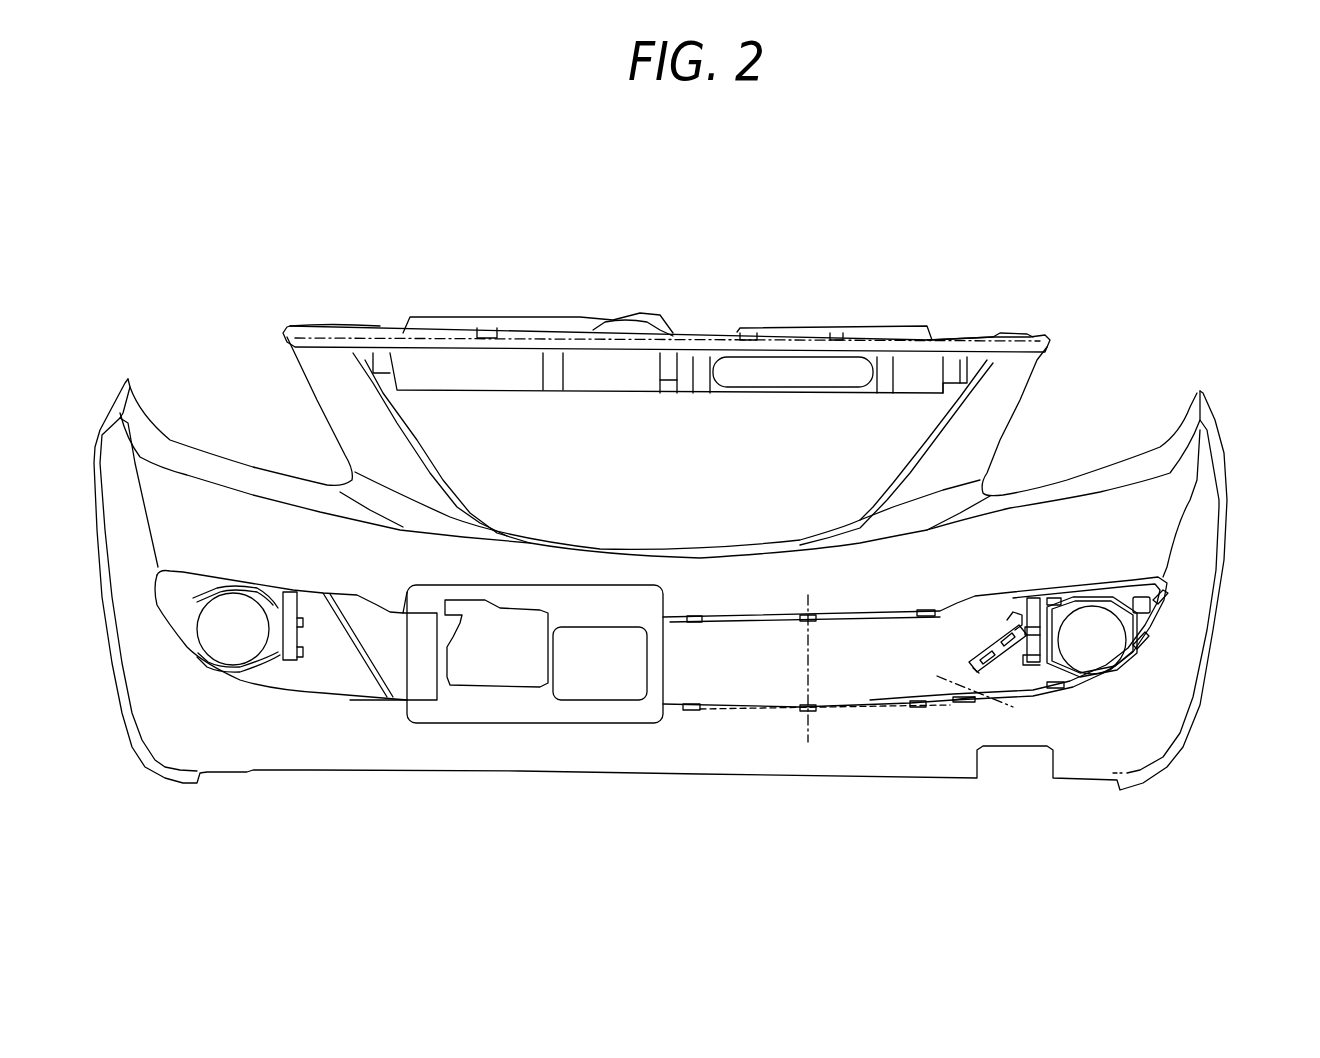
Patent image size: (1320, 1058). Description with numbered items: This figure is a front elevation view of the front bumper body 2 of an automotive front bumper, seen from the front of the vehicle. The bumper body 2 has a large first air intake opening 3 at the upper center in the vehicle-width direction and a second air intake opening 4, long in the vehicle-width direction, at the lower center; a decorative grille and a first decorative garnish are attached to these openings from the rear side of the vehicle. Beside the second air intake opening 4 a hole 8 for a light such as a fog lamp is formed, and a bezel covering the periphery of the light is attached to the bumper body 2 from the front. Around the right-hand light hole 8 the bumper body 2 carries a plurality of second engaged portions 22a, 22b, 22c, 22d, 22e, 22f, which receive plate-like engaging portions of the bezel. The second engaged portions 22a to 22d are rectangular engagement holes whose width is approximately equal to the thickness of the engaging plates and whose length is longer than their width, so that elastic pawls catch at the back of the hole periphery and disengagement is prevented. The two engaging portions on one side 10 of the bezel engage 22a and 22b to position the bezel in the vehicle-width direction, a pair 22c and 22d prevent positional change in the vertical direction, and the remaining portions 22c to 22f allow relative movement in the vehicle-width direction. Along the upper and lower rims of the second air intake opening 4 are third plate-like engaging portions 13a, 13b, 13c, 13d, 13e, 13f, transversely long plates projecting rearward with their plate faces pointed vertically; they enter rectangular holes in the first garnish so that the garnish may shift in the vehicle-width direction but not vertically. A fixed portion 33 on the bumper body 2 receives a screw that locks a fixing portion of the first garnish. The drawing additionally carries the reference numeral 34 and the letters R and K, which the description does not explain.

The front bumper body 2 is at (652, 300).
The first air intake opening 3 is at (800, 415).
The second air intake opening 4 is at (878, 690).
The hole for the light 8 is at (1107, 637).
The one side of the bezel 10 is at (1147, 620).
The third engaging portion 13a is at (692, 618).
The third engaging portion 13b is at (813, 614).
The third engaging portion 13c is at (930, 610).
The third engaging portion 13d is at (693, 710).
The third engaging portion 13e is at (800, 710).
The third engaging portion 13f is at (920, 708).
The second engaged portion 22a is at (1165, 590).
The second engaged portion 22b is at (1145, 642).
The second engaged portion 22c is at (1058, 692).
The second engaged portion 22d is at (1053, 595).
The second engaged portion 22e is at (1000, 637).
The second engaged portion 22f is at (1000, 678).
The fixed portion 33 is at (985, 702).
The license plate recess 34 is at (535, 705).
The reference axis R is at (808, 668).
The reference line K is at (980, 699).